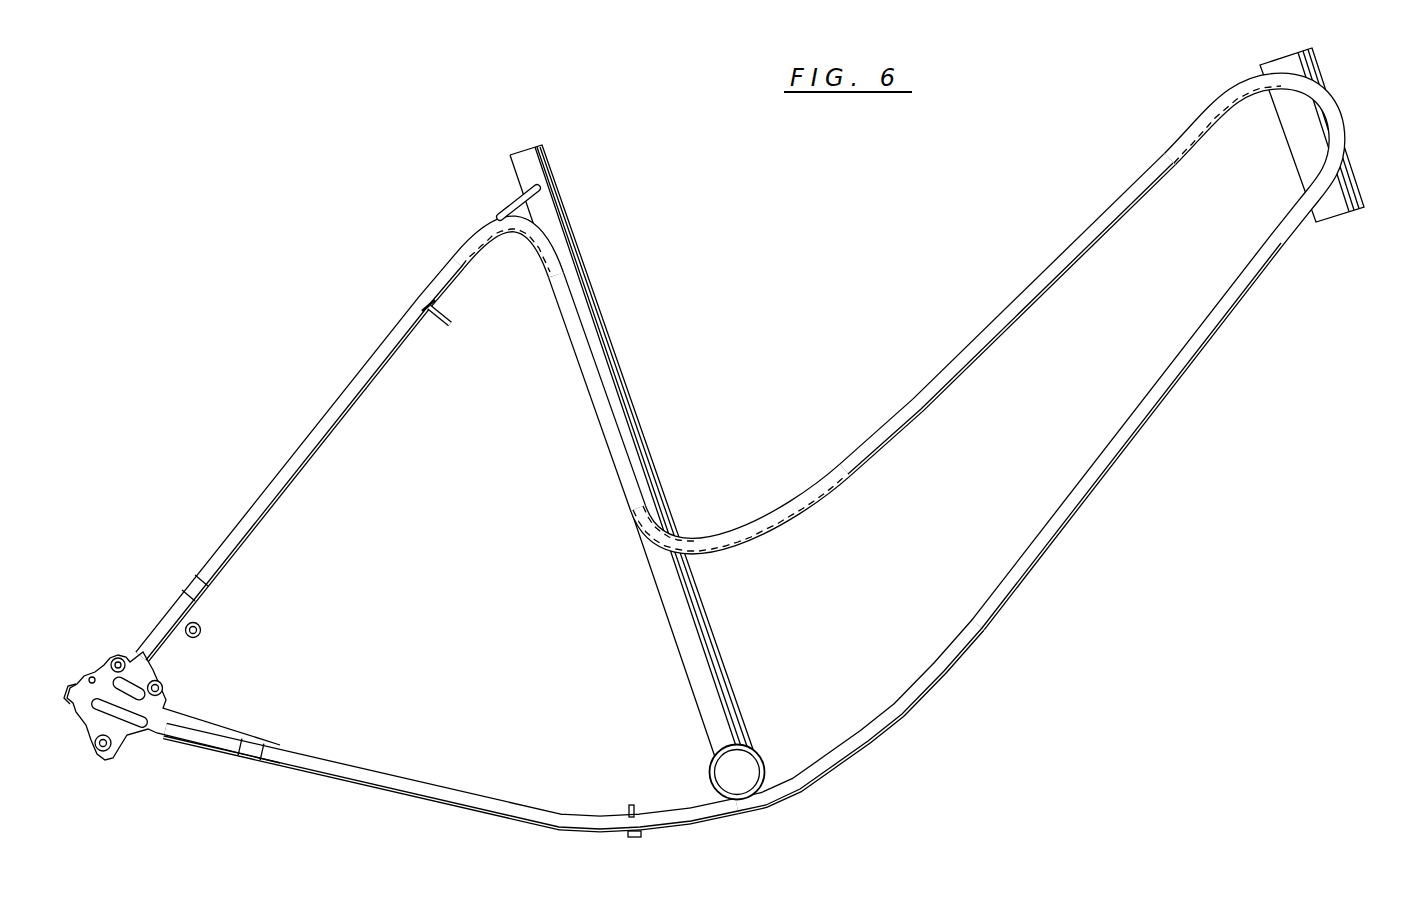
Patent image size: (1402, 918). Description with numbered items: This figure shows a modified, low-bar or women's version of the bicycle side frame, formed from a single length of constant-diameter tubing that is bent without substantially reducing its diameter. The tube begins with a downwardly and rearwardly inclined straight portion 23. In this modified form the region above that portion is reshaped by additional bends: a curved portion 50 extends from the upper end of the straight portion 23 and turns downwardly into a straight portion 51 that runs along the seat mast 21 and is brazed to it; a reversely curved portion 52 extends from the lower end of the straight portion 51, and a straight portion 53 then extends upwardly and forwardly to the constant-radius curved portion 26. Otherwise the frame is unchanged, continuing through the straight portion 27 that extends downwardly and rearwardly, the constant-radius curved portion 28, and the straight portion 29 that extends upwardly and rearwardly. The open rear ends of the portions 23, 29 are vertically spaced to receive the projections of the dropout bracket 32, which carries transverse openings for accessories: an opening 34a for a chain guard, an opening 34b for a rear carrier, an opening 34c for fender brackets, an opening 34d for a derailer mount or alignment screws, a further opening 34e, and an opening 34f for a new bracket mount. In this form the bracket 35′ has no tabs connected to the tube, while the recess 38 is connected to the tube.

The seat mast 21 is at (693, 674).
The first straight portion 23 is at (262, 519).
The fourth curved portion 26 is at (1323, 110).
The fifth straight portion 27 is at (1187, 370).
The sixth curved portion 28 is at (806, 769).
The seventh straight portion 29 is at (448, 791).
The bracket (dropout) 32 is at (174, 683).
The opening for chain guard 34a is at (163, 699).
The opening for rear carrier 34b is at (123, 657).
The opening for fender brackets 34c is at (96, 676).
The opening for derailer mount 34d is at (115, 752).
The dropout tab 34e is at (70, 692).
The opening for new bracket mount 34f is at (200, 623).
The bracket 35′ is at (508, 216).
The recess 38 is at (518, 192).
The curved portion 50 is at (566, 243).
The straight portion 51 is at (611, 374).
The reversely curved portion 52 is at (730, 530).
The straight portion 53 is at (968, 366).